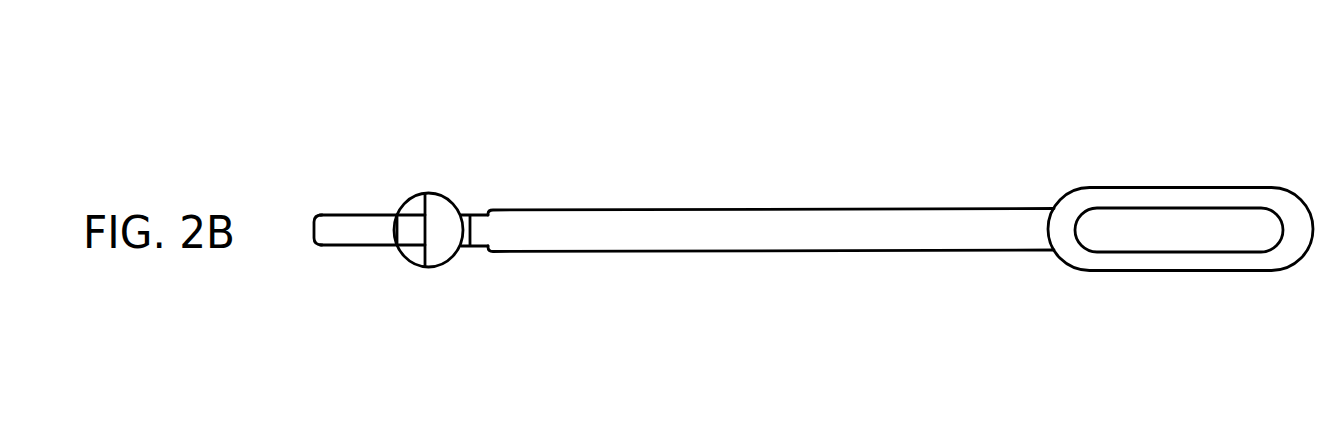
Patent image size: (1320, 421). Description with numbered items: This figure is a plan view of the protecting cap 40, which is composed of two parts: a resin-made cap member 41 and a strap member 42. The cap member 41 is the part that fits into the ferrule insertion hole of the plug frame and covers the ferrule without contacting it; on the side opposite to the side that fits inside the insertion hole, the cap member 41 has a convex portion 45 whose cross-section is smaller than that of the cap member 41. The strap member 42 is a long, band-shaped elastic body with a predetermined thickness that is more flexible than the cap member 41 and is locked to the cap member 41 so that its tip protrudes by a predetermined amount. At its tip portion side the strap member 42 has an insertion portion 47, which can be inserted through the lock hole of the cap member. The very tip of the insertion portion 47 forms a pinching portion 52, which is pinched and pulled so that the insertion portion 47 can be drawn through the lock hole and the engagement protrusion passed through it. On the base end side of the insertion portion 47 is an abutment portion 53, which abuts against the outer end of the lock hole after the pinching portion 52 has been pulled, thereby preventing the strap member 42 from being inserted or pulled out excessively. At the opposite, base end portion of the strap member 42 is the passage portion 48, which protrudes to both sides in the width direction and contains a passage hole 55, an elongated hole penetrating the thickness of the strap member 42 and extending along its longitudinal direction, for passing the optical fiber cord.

The protecting cap 40 is at (860, 122).
The cap member 41 is at (409, 205).
The convex portion 45 is at (443, 210).
The insertion portion 47 is at (365, 232).
The pinching portion 52 is at (327, 232).
The abutment portion 53 is at (470, 247).
The strap member 42 is at (808, 232).
The passage portion 48 is at (1140, 197).
The passage hole 55 is at (1220, 220).